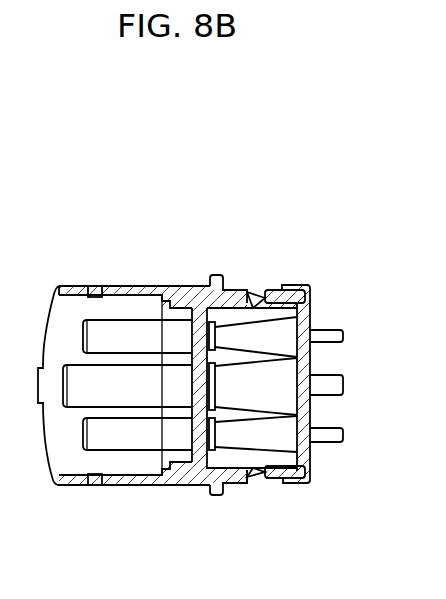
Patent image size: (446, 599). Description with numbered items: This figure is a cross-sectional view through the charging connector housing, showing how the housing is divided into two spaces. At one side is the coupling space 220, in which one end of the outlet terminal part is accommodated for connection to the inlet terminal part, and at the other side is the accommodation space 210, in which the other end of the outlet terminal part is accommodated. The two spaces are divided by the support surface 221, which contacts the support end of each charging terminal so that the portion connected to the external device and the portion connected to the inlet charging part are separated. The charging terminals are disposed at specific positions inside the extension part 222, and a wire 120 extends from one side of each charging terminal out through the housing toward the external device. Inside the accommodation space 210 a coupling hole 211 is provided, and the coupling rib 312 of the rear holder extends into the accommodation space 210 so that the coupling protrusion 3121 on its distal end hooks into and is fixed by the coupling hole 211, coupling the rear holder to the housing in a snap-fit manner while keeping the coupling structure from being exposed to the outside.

The wire 120 is at (325, 335).
The accommodation space 210 is at (240, 313).
The coupling hole 211 is at (255, 480).
The coupling space 220 is at (143, 309).
The support surface 221 is at (200, 433).
The extension part 222 is at (118, 430).
The coupling rib 312 is at (275, 474).
The coupling protrusion 3121 is at (258, 478).